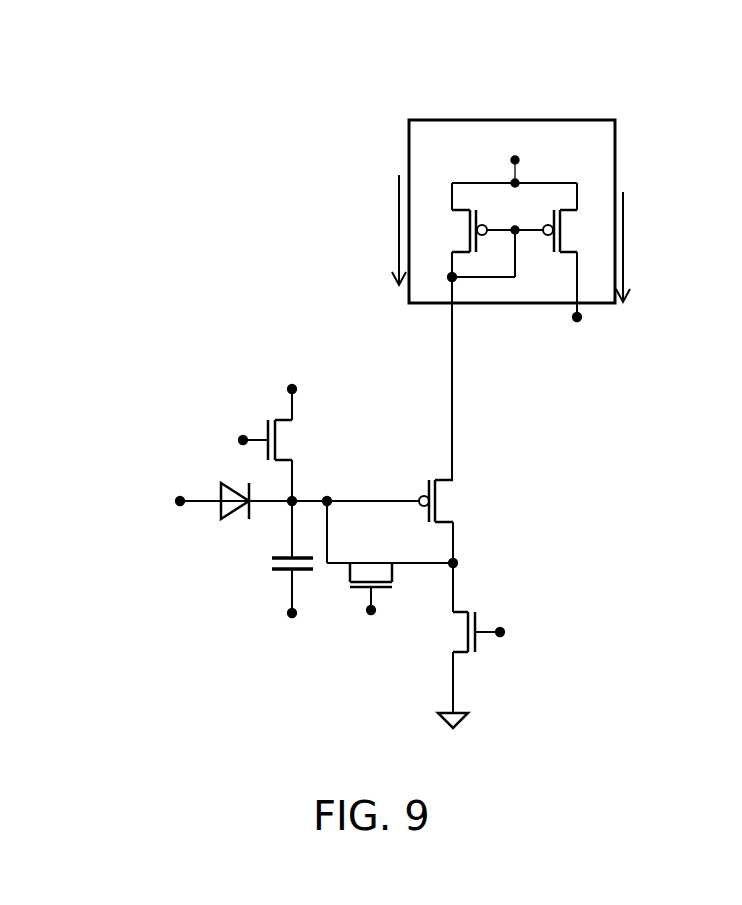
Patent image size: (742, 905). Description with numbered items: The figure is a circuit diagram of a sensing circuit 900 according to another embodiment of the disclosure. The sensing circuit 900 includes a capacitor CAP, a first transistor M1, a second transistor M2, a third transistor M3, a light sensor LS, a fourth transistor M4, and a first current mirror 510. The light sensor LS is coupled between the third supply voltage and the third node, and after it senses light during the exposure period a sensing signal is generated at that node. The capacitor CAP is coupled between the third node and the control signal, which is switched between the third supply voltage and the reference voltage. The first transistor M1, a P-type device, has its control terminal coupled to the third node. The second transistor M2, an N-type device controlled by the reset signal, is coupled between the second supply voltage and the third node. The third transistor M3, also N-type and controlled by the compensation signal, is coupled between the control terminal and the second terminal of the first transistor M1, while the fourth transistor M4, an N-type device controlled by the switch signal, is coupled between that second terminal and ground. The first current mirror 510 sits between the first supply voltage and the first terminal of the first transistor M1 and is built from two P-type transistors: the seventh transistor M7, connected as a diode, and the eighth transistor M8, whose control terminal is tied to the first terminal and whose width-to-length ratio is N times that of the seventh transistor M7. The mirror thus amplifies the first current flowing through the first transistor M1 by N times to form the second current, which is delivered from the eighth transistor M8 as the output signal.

The sensing circuit 900 is at (240, 775).
The first current mirror 510 is at (450, 158).
The first transistor M1 is at (448, 501).
The second transistor M2 is at (290, 440).
The third transistor M3 is at (370, 572).
The fourth transistor M4 is at (458, 632).
The seventh transistor M7 is at (458, 230).
The eighth transistor M8 is at (572, 230).
The light sensor LS is at (242, 486).
The capacitor CAP is at (272, 563).